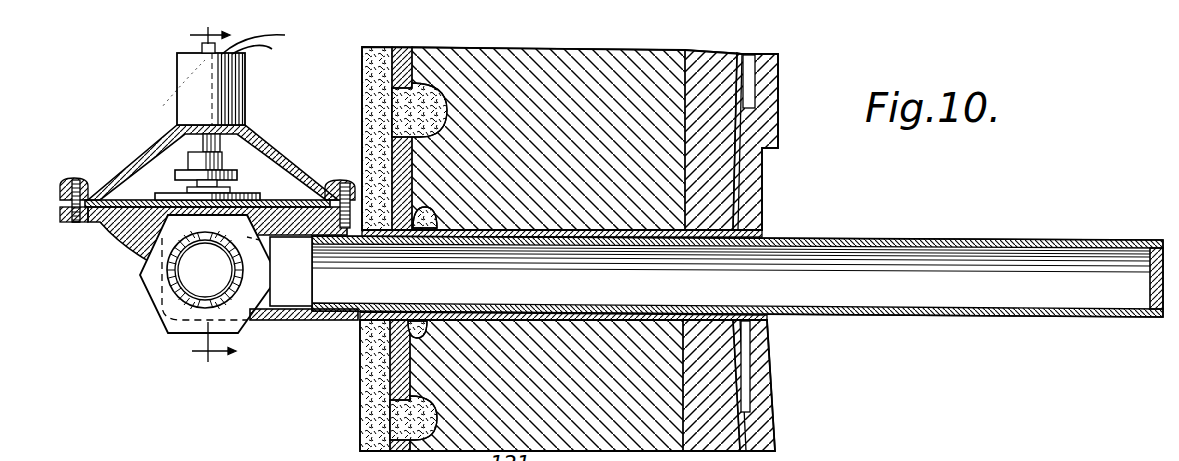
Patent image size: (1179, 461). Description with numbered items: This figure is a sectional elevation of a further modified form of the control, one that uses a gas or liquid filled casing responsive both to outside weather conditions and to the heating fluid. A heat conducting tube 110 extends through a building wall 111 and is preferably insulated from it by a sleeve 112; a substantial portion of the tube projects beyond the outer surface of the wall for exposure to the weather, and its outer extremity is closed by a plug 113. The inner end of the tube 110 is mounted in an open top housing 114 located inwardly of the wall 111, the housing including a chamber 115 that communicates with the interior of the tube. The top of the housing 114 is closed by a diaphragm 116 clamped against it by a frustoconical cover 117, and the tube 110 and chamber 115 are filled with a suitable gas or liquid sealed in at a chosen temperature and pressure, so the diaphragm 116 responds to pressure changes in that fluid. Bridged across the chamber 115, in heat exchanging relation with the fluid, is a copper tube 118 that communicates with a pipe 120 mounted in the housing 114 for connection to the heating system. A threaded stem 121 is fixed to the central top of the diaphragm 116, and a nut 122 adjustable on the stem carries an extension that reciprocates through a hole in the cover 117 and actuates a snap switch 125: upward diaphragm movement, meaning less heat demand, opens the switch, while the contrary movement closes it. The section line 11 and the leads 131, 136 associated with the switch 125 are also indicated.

The section line 11 is at (197, 199).
The heat conducting tube 110 is at (860, 237).
The building wall 111 is at (763, 165).
The sleeve 112 is at (573, 223).
The plug 113 is at (1148, 288).
The open top housing 114 is at (292, 322).
The chamber 115 is at (291, 271).
The diaphragm 116 is at (130, 198).
The frustoconical cover 117 is at (130, 178).
The tube 118 is at (205, 270).
The pipe 120 is at (172, 265).
The threaded stem 121 is at (232, 194).
The nut 122 is at (224, 160).
The snap switch 125 is at (247, 90).
The lead wire 131 is at (285, 35).
The lead wire 136 is at (272, 49).